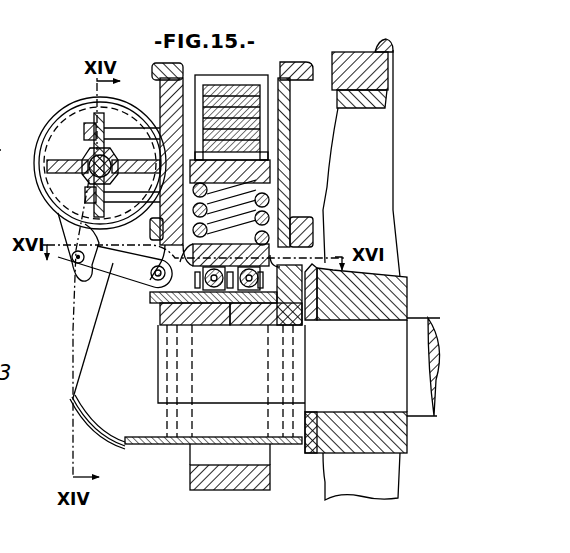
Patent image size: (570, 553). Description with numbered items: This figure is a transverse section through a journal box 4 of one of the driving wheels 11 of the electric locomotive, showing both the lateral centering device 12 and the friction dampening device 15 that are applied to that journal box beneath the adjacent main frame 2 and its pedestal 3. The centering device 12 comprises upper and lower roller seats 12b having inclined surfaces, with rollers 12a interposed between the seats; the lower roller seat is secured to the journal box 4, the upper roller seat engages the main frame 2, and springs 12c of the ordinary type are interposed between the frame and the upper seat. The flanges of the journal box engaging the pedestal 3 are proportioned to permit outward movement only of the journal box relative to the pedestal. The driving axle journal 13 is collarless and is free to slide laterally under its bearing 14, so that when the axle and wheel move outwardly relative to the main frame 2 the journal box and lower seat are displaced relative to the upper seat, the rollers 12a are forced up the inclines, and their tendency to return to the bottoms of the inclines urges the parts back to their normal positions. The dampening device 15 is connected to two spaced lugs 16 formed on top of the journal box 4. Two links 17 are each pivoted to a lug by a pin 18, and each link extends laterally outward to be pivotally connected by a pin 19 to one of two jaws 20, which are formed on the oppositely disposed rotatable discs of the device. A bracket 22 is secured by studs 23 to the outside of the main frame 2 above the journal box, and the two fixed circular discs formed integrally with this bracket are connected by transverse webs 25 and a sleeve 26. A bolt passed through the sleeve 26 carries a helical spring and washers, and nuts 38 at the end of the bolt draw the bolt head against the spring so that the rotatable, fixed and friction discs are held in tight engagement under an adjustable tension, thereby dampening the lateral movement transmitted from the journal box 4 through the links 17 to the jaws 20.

The main frame 2 is at (283, 63).
The base block 3 is at (195, 455).
The journal box 4 is at (128, 432).
The driving wheel 11 is at (368, 176).
The centering device 12 is at (232, 255).
The rollers 12a is at (252, 310).
The roller seats 12b is at (222, 312).
The springs 12c is at (260, 133).
The driving axle journal 13 is at (245, 397).
The bearing 14 is at (285, 325).
The dampening device 15 is at (74, 128).
The lugs 16 is at (140, 281).
The links 17 is at (83, 274).
The pin 18 is at (155, 286).
The pin 19 is at (73, 266).
The jaws 20 is at (62, 232).
The bracket 22 is at (157, 108).
The studs 23 is at (117, 126).
The transverse webs 25 is at (70, 152).
The sleeve 26 is at (80, 182).
The nuts 38 is at (9, 150).